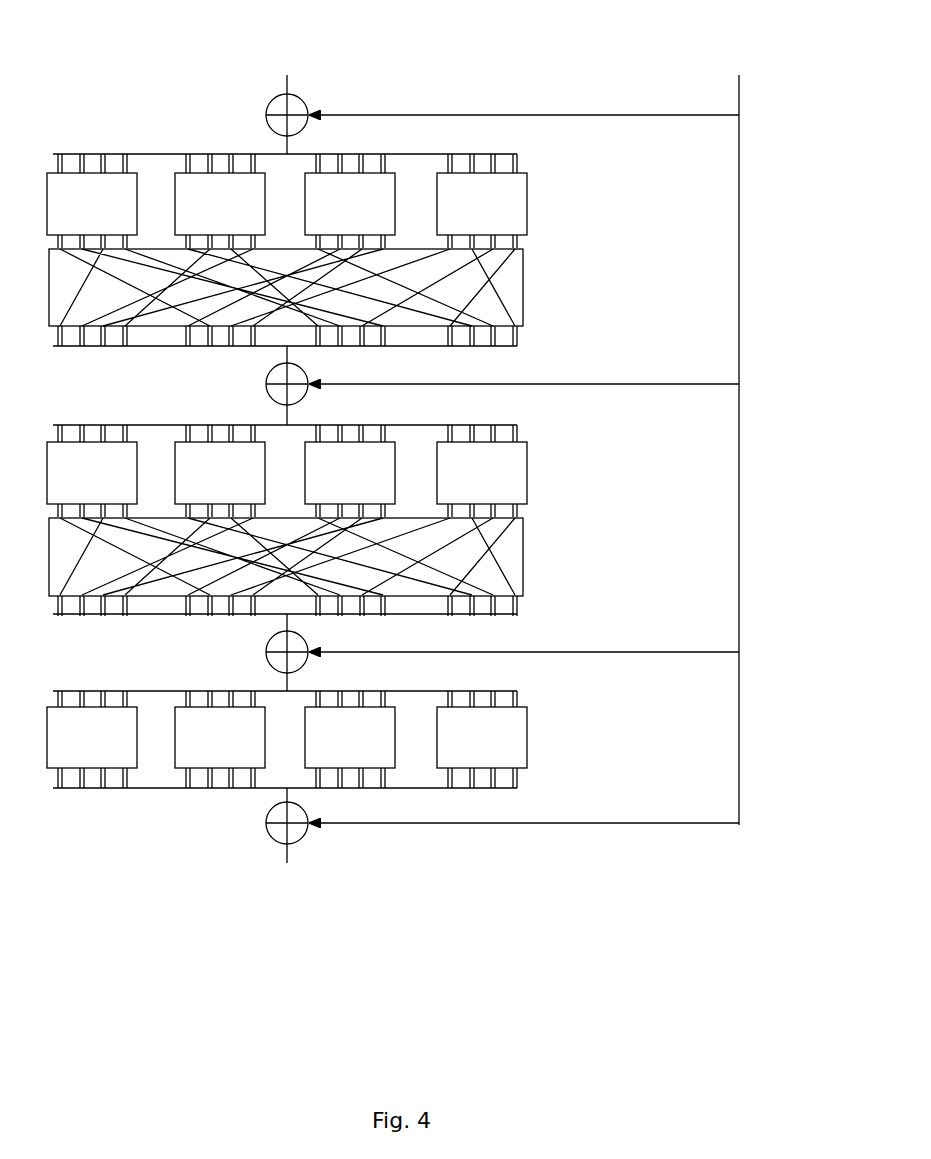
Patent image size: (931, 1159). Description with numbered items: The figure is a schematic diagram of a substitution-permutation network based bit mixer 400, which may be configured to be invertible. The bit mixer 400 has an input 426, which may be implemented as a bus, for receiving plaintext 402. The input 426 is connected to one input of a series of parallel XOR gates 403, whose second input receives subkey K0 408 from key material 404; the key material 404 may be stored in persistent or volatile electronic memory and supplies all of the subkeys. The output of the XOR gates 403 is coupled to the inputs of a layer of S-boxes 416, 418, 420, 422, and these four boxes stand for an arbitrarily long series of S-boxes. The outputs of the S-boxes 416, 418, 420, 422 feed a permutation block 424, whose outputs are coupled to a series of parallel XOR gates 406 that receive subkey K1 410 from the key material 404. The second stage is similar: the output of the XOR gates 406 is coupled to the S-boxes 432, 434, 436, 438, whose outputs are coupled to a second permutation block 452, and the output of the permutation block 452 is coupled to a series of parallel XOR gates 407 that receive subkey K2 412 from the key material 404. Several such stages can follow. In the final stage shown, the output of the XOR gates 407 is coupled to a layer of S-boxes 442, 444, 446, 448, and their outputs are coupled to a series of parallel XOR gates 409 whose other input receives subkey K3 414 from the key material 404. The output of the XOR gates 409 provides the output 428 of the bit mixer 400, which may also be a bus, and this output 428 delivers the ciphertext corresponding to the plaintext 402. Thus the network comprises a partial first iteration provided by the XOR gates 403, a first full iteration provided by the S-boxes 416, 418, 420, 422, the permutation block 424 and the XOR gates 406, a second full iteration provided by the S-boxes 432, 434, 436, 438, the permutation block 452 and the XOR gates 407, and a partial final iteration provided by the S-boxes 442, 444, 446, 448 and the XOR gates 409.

The bit mixer 400 is at (583, 920).
The plaintext 402 is at (390, 50).
The XOR gates 403 is at (266, 116).
The key material 404 is at (700, 48).
The XOR gates 406 is at (266, 384).
The XOR gates 407 is at (266, 652).
The round key K0 408 is at (570, 94).
The XOR gates 409 is at (266, 826).
The round key K1 410 is at (607, 347).
The subkey K2 412 is at (613, 613).
The subkey K3 414 is at (608, 785).
The S-box 416 is at (71, 231).
The S-box 418 is at (199, 231).
The S-box 420 is at (329, 231).
The S-box 422 is at (461, 231).
The permutation block 424 is at (525, 285).
The input 426 is at (288, 84).
The output 428 is at (287, 863).
The S-box 432 is at (71, 500).
The S-box 434 is at (199, 500).
The S-box 436 is at (329, 500).
The S-box 438 is at (461, 500).
The S-box 442 is at (71, 765).
The S-box 444 is at (199, 765).
The S-box 446 is at (329, 765).
The S-box 448 is at (461, 765).
The permutation block 452 is at (525, 556).